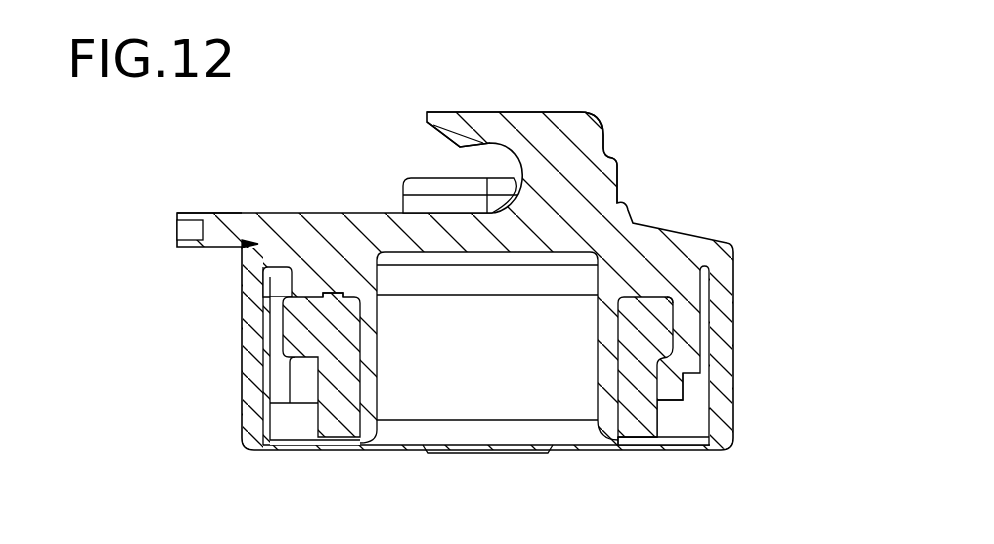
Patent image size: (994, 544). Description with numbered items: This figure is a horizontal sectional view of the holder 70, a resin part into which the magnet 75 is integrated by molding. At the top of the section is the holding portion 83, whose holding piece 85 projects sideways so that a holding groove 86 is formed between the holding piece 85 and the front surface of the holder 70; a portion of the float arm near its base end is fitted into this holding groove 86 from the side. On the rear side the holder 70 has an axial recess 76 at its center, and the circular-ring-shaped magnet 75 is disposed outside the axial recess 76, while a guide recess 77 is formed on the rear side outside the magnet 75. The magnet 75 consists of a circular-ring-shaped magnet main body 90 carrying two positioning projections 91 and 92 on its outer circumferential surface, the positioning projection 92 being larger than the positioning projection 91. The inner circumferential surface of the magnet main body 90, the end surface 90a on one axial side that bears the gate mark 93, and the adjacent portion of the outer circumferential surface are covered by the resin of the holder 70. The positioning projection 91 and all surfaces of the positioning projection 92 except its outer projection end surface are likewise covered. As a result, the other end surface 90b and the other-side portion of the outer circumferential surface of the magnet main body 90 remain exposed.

The holder 70 is at (308, 132).
The magnet 75 is at (656, 421).
The axial recess 76 is at (391, 387).
The guide recess 77 is at (278, 422).
The holding portion 83 is at (601, 128).
The holding piece 85 is at (510, 111).
The holding groove 86 is at (468, 150).
The magnet main body 90 is at (643, 377).
The end surface 90a is at (680, 306).
The end surface 90b is at (640, 440).
The positioning projection 91 is at (728, 256).
The positioning projection 92 is at (283, 317).
The gate mark 93 is at (340, 292).